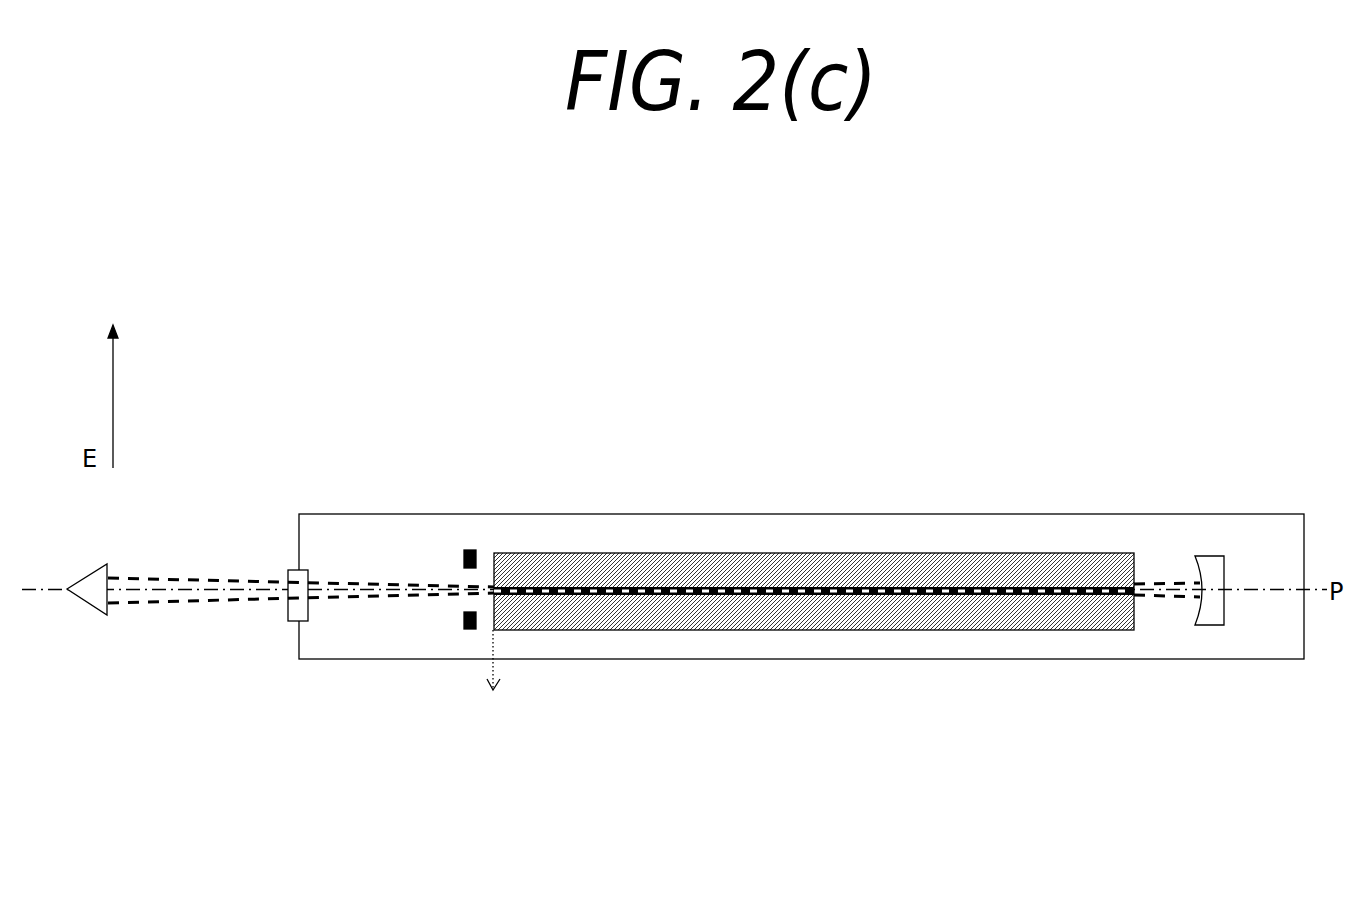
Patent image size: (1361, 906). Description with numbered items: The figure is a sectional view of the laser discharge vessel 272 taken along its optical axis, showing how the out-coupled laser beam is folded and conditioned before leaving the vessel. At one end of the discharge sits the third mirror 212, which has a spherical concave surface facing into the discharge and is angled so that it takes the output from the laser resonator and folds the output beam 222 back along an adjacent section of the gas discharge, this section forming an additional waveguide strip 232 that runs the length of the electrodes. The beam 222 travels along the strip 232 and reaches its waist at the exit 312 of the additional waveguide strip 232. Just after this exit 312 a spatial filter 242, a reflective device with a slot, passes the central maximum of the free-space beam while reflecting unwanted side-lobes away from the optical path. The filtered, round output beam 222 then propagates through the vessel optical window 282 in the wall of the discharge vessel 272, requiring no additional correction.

The third mirror 212 is at (1223, 622).
The output beam 222 is at (165, 573).
The additional waveguide strip 232 is at (752, 612).
The spatial filter 242 is at (465, 622).
The discharge vessel 272 is at (1049, 512).
The vessel optical window 282 is at (287, 612).
The exit of the additional waveguide strip 312 is at (493, 689).